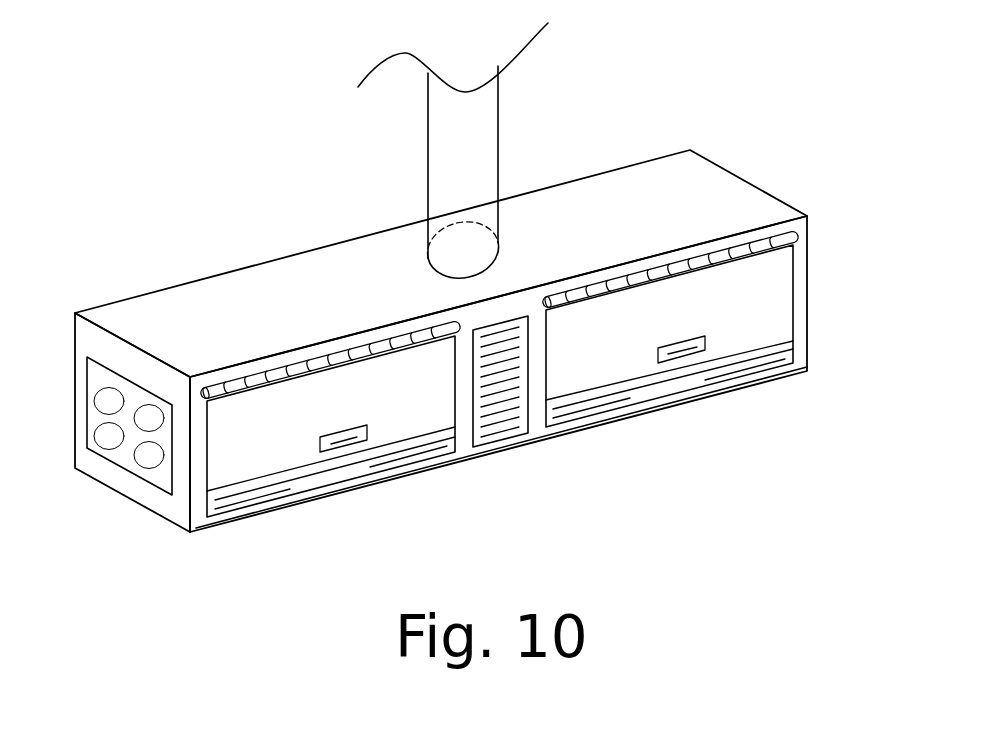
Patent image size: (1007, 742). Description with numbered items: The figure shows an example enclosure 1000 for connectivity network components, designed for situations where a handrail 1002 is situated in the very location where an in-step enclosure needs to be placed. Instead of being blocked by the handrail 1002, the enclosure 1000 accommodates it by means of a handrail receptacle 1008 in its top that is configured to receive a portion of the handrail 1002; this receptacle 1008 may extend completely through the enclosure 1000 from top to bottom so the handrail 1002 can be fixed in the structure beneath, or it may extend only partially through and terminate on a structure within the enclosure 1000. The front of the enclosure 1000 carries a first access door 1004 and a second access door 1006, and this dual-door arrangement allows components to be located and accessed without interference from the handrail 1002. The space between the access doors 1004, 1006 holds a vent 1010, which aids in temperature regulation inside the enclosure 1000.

The example enclosure 1000 is at (139, 234).
The handrail 1002 is at (500, 98).
The first access door 1004 is at (257, 465).
The second access door 1006 is at (745, 308).
The handrail receptacle 1008 is at (426, 258).
The vent 1010 is at (508, 435).